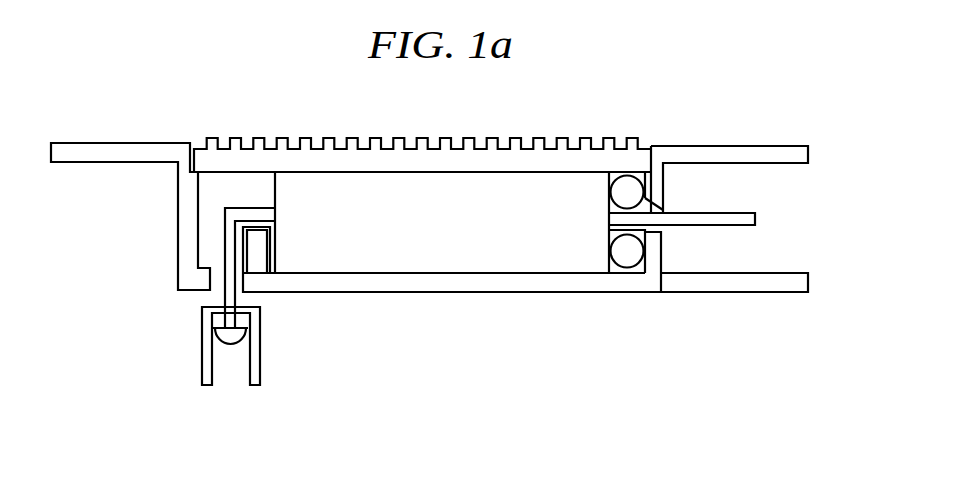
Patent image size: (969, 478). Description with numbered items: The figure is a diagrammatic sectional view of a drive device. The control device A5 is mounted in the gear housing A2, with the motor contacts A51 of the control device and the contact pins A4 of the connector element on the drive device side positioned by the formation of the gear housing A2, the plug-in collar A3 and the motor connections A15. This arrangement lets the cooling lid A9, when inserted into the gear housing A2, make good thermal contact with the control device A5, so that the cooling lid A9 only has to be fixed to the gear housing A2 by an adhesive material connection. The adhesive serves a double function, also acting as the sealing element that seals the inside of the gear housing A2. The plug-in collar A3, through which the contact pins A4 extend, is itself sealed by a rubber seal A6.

The gear housing A2 is at (123, 150).
The cooling lid A9 is at (477, 163).
The control device A5 is at (413, 250).
The motor contacts A51 is at (225, 253).
The motor connections A15 is at (229, 373).
The contact pins A4 is at (755, 218).
The rubber seal A6 is at (625, 268).
The plug-in collar A3 is at (702, 275).